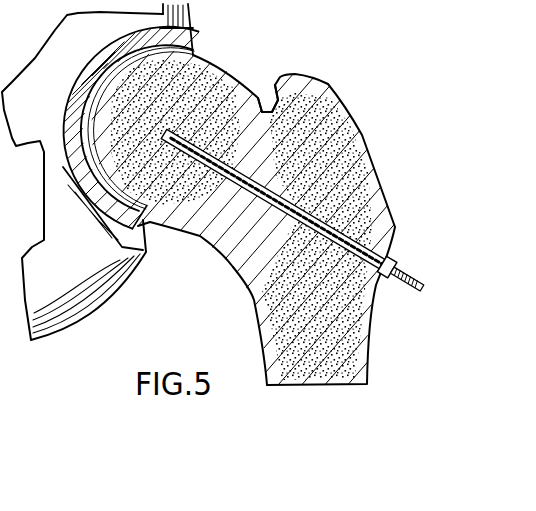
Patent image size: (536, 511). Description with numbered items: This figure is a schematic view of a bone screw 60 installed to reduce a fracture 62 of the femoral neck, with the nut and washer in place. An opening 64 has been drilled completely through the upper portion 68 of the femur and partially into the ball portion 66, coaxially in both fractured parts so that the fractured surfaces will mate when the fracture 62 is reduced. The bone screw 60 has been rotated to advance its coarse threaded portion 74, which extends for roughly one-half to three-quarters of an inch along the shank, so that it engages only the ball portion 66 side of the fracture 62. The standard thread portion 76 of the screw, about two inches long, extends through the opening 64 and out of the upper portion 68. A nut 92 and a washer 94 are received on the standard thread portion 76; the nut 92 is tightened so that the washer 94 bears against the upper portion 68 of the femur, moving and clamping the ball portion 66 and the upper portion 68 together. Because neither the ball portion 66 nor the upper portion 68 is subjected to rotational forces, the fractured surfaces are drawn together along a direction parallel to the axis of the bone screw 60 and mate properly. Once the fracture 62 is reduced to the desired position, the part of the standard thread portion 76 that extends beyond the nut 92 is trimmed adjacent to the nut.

The bone screw 60 is at (311, 233).
The fracture 62 is at (198, 224).
The opening 64 is at (240, 268).
The ball portion 66 is at (215, 86).
The upper portion 68 is at (350, 135).
The coarse threaded portion 74 is at (223, 115).
The standard thread portion 76 is at (372, 242).
The nut 92 is at (387, 288).
The washer 94 is at (386, 258).